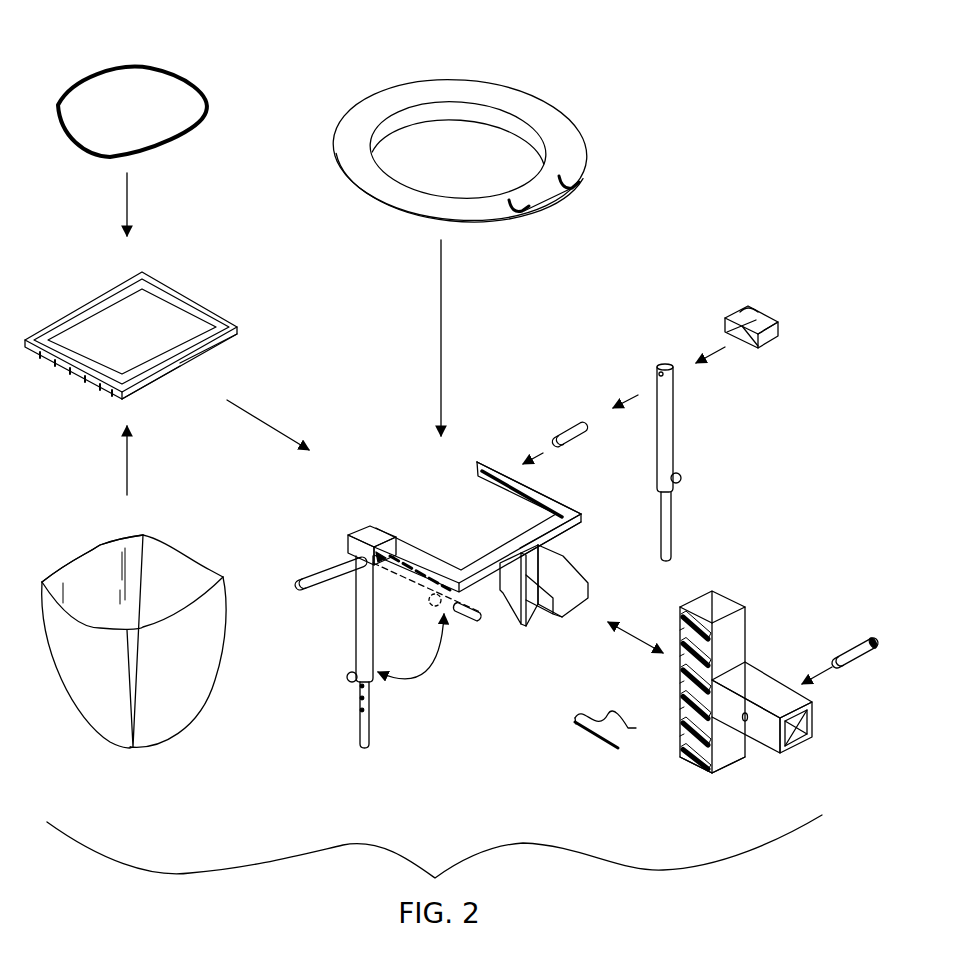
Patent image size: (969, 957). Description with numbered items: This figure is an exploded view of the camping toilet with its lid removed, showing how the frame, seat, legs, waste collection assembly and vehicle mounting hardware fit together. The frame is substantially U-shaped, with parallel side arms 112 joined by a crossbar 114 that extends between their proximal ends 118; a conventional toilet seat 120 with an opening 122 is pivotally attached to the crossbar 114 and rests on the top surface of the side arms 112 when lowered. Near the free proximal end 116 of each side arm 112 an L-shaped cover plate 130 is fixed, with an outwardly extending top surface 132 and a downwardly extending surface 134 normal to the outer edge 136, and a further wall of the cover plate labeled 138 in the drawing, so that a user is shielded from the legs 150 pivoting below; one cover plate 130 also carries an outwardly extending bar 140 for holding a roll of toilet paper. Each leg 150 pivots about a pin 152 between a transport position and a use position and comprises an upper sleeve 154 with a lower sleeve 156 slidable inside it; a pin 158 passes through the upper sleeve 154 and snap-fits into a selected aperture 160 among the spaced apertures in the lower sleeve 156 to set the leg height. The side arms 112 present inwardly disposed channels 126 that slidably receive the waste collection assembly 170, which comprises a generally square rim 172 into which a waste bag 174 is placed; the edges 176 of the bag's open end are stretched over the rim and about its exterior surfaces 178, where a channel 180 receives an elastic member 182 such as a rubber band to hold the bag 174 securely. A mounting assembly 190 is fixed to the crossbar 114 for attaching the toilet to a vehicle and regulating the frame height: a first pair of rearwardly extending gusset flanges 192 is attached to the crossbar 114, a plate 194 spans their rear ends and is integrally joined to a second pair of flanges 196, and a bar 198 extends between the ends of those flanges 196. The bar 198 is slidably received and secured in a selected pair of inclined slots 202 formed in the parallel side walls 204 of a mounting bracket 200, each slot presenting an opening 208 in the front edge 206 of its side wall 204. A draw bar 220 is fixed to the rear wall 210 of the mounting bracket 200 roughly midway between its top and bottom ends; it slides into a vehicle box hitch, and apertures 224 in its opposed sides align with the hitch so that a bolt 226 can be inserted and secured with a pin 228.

The side arm 112 is at (545, 490).
The crossbar 114 is at (567, 527).
The proximal end 116 is at (480, 460).
The proximal end 118 is at (560, 510).
The toilet seat 120 is at (481, 127).
The opening 122 is at (458, 130).
The channel 126 is at (478, 470).
The cover plate 130 is at (545, 387).
The top surface 132 is at (370, 542).
The downwardly extending surface 134 is at (378, 565).
The outer edge 136 is at (350, 540).
The bracket side wall 138 is at (353, 533).
The outwardly extending bar 140 is at (335, 568).
The leg 150 is at (515, 566).
The pin 152 is at (560, 430).
The upper sleeve 154 is at (357, 622).
The lower sleeve 156 is at (370, 737).
The pin 158 is at (345, 677).
The aperture 160 is at (358, 710).
The waste collection assembly 170 is at (168, 325).
The rim 172 is at (190, 297).
The waste bag 174 is at (132, 636).
The edge 176 is at (70, 567).
The exterior surface 178 is at (228, 337).
The channel 180 is at (160, 372).
The elastic member 182 is at (160, 68).
The mounting assembly 190 is at (551, 623).
The flange 192 is at (510, 585).
The plate 194 is at (520, 625).
The flange 196 is at (582, 570).
The bar 198 is at (563, 600).
The mounting bracket 200 is at (740, 702).
The inclined slot 202 is at (685, 683).
The side wall 204 is at (690, 758).
The front edge 206 is at (679, 630).
The opening 208 is at (678, 731).
The rear wall 210 is at (728, 650).
The draw bar 220 is at (792, 695).
The aperture 224 is at (748, 722).
The bolt 226 is at (857, 618).
The pin 228 is at (590, 745).